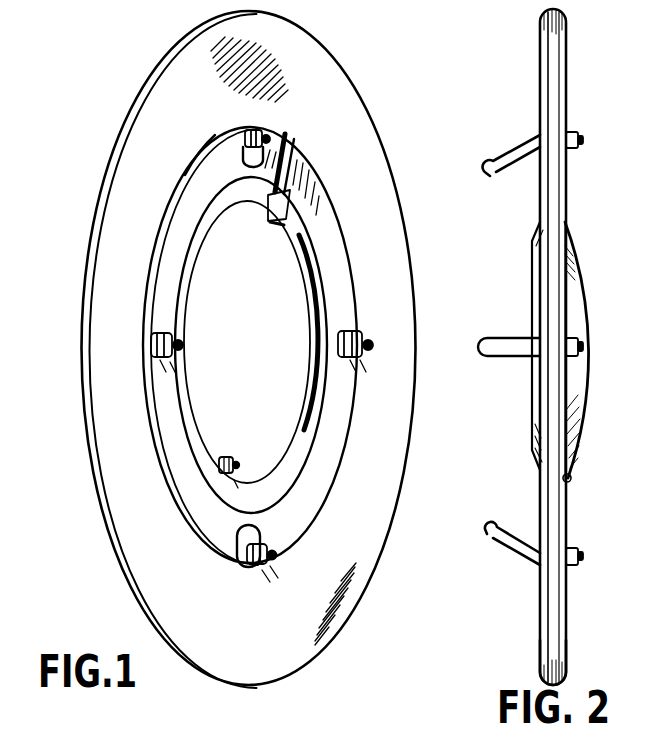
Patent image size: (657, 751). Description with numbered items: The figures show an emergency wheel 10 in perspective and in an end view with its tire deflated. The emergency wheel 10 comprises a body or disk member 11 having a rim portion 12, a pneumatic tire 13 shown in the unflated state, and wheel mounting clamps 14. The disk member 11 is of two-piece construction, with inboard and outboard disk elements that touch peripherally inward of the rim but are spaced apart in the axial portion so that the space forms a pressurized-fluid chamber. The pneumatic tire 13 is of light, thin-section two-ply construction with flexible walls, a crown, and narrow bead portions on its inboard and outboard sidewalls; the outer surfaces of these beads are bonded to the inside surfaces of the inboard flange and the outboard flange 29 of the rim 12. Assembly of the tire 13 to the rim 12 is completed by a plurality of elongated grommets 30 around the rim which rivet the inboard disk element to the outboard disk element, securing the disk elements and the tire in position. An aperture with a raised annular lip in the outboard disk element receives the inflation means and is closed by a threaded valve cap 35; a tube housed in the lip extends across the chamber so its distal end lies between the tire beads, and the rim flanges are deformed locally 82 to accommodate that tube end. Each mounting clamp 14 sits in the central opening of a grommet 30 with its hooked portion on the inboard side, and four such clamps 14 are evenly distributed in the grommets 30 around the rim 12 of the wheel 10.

In FIG. 1, the emergency wheel 10 is at (356, 620).
In FIG. 2, the emergency wheel 10 is at (572, 626).
In FIG. 1, the disk member 11 is at (213, 202).
In FIG. 1, the rim portion 12 is at (200, 147).
In FIG. 1, the pneumatic tire 13 is at (376, 568).
In FIG. 2, the pneumatic tire 13 is at (540, 633).
In FIG. 1, the wheel mounting clamps 14 is at (266, 566).
In FIG. 2, the wheel mounting clamps 14 is at (502, 144).
In FIG. 1, the outboard flange 29 is at (334, 190).
In FIG. 2, the outboard flange 29 is at (560, 351).
In FIG. 1, the elongated grommets 30 is at (238, 540).
In FIG. 1, the valve cap 35 is at (236, 471).
In FIG. 2, the valve cap 35 is at (572, 481).
In FIG. 1, the local deformation 82 is at (300, 151).